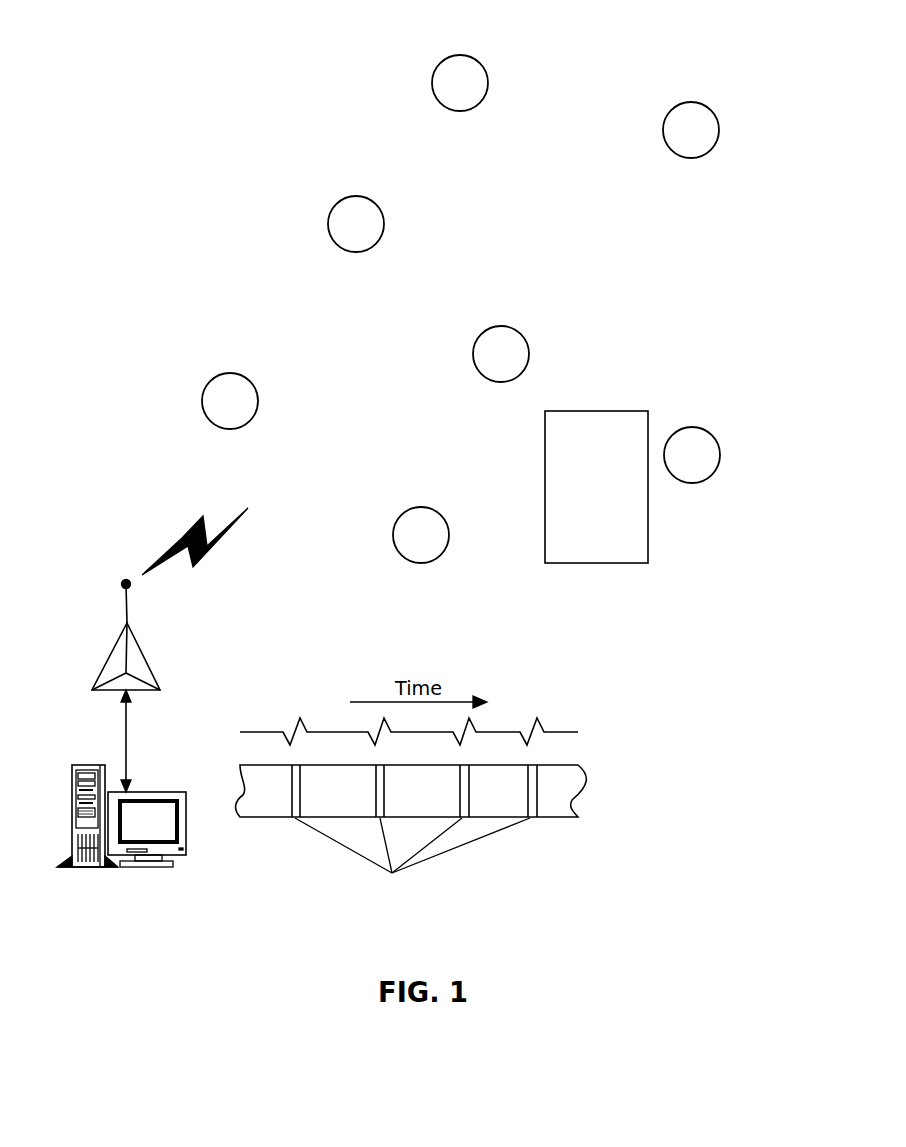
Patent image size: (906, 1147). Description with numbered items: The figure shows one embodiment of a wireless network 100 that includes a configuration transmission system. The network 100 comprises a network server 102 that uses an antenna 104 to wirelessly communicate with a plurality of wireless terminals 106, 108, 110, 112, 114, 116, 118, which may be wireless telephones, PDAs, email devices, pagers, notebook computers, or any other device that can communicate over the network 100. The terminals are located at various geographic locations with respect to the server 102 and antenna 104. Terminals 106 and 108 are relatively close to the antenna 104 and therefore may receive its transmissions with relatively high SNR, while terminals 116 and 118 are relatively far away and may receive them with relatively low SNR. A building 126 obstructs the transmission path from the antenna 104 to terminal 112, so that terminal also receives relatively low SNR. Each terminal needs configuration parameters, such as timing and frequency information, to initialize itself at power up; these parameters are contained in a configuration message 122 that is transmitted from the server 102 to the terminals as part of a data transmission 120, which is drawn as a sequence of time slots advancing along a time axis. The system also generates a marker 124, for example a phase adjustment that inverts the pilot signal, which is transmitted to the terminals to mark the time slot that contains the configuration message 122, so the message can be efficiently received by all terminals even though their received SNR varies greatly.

The wireless network 100 is at (136, 50).
The network server 102 is at (147, 838).
The antenna 104 is at (137, 599).
The wireless terminal 106 is at (256, 381).
The wireless terminal 108 is at (447, 516).
The wireless terminal 110 is at (527, 335).
The wireless terminal 112 is at (717, 436).
The wireless terminal 114 is at (384, 206).
The wireless terminal 116 is at (487, 65).
The wireless terminal 118 is at (717, 112).
The data transmission 120 is at (449, 780).
The configuration message 122 is at (412, 872).
The marker 124 is at (439, 720).
The building 126 is at (609, 468).